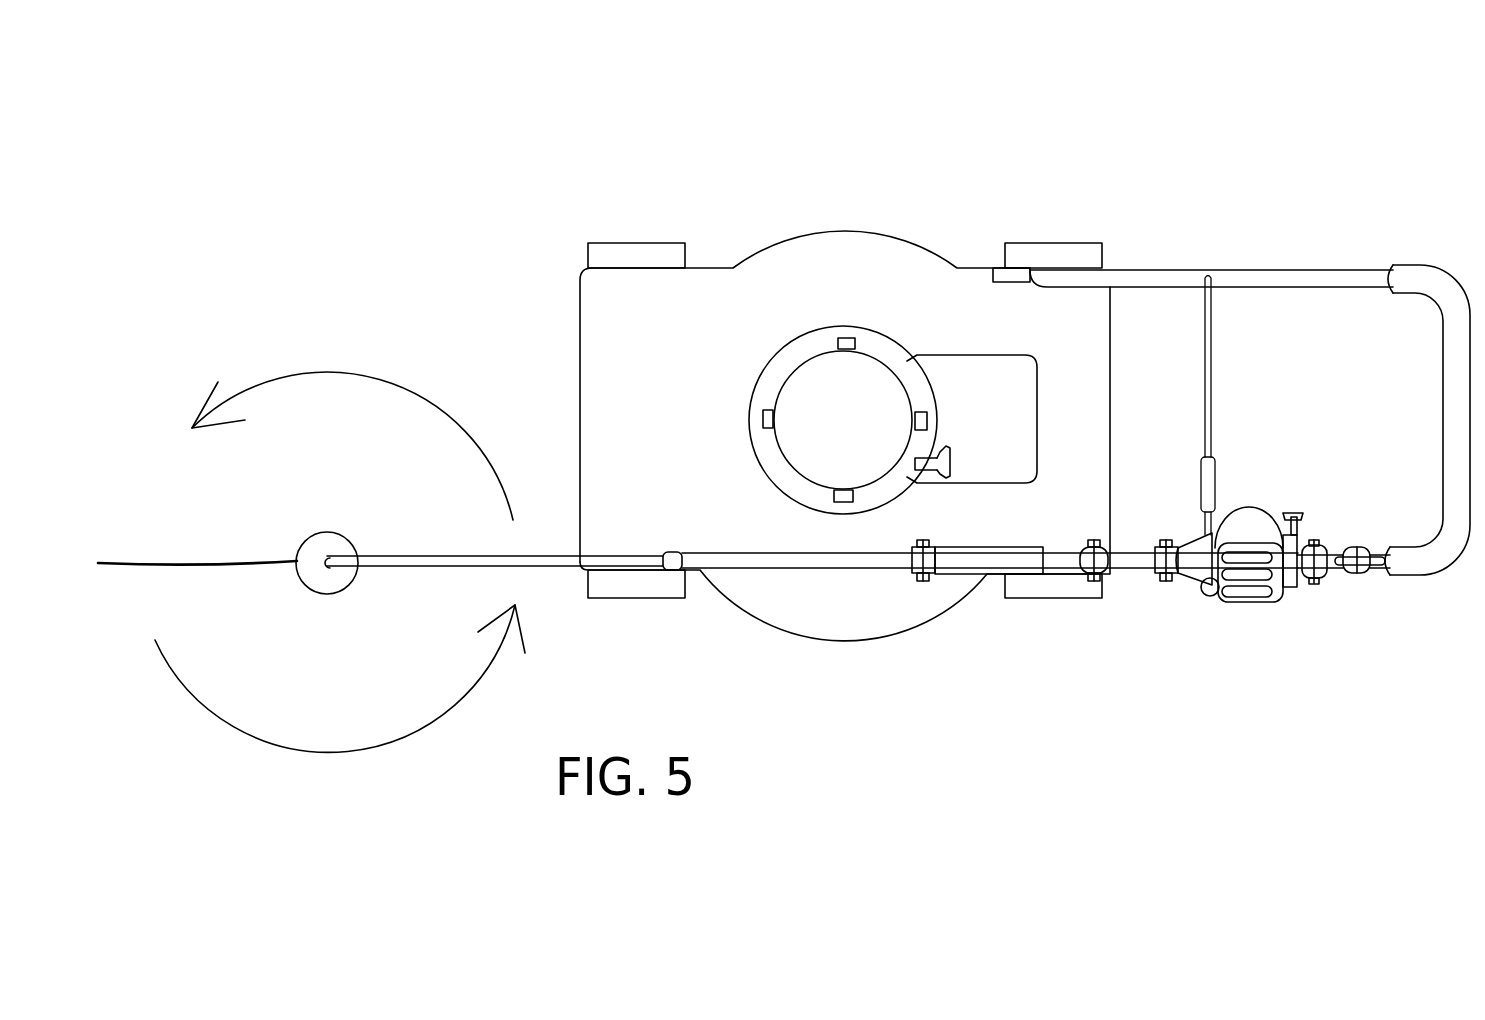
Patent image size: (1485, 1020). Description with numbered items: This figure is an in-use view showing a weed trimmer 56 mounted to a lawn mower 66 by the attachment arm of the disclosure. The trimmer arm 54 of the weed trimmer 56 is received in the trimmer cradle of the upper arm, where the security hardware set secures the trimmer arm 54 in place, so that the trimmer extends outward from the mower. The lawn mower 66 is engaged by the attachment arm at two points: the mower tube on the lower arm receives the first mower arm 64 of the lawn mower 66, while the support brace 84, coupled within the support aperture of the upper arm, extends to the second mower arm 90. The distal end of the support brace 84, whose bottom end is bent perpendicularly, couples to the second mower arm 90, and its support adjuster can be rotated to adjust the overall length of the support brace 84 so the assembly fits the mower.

The trimmer arm 54 is at (737, 567).
The weed trimmer 56 is at (1247, 577).
The first mower arm 64 is at (1355, 572).
The lawn mower 66 is at (807, 337).
The support brace 84 is at (1207, 395).
The second mower arm 90 is at (1157, 277).